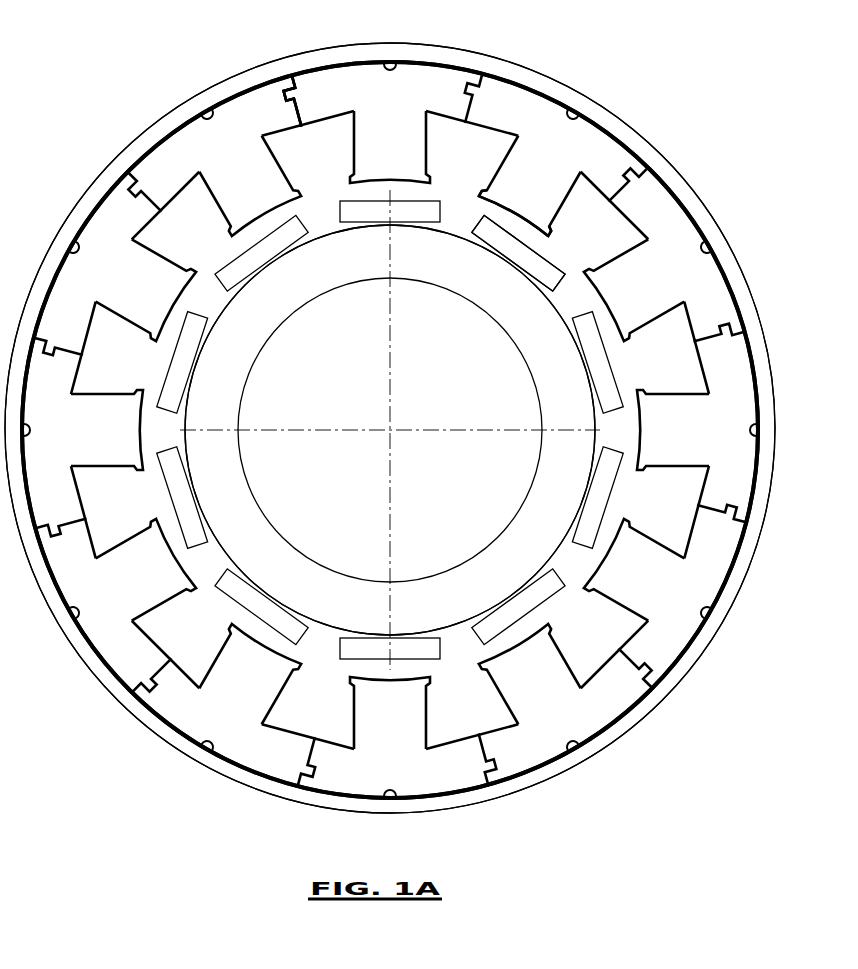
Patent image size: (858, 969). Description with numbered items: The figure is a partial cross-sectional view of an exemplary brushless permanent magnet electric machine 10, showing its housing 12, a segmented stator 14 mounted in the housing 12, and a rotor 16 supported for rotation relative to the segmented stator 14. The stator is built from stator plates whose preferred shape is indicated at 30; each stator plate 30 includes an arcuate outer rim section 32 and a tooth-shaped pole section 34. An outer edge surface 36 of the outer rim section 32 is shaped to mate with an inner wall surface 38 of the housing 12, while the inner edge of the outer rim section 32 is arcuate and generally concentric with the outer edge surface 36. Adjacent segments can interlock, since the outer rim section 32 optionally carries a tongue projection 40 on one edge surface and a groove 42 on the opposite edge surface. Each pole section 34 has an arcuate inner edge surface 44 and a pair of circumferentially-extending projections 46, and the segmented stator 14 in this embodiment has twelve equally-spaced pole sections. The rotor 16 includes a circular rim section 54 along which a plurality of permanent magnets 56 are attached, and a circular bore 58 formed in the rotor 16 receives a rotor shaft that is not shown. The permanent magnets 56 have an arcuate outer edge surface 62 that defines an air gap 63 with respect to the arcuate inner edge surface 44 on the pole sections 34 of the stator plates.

The brushless permanent magnet electric machine 10 is at (716, 151).
The housing 12 is at (735, 265).
The segmented stator 14 is at (745, 320).
The rotor 16 is at (513, 313).
The stator plate 30 is at (425, 429).
The arcuate outer rim section 32 is at (389, 429).
The tooth-shaped pole section 34 is at (390, 430).
The outer edge surface 36 is at (443, 57).
The inner wall surface 38 is at (695, 217).
The tongue projection 40 is at (293, 100).
The groove 42 is at (287, 95).
The arcuate inner edge surface 44 is at (510, 210).
The circumferentially-extending projections 46 is at (483, 197).
The circular rim section 54 is at (227, 305).
The permanent magnets 56 is at (352, 218).
The circular bore 58 is at (262, 503).
The arcuate outer edge surface 62 is at (530, 245).
The air gap 63 is at (620, 349).